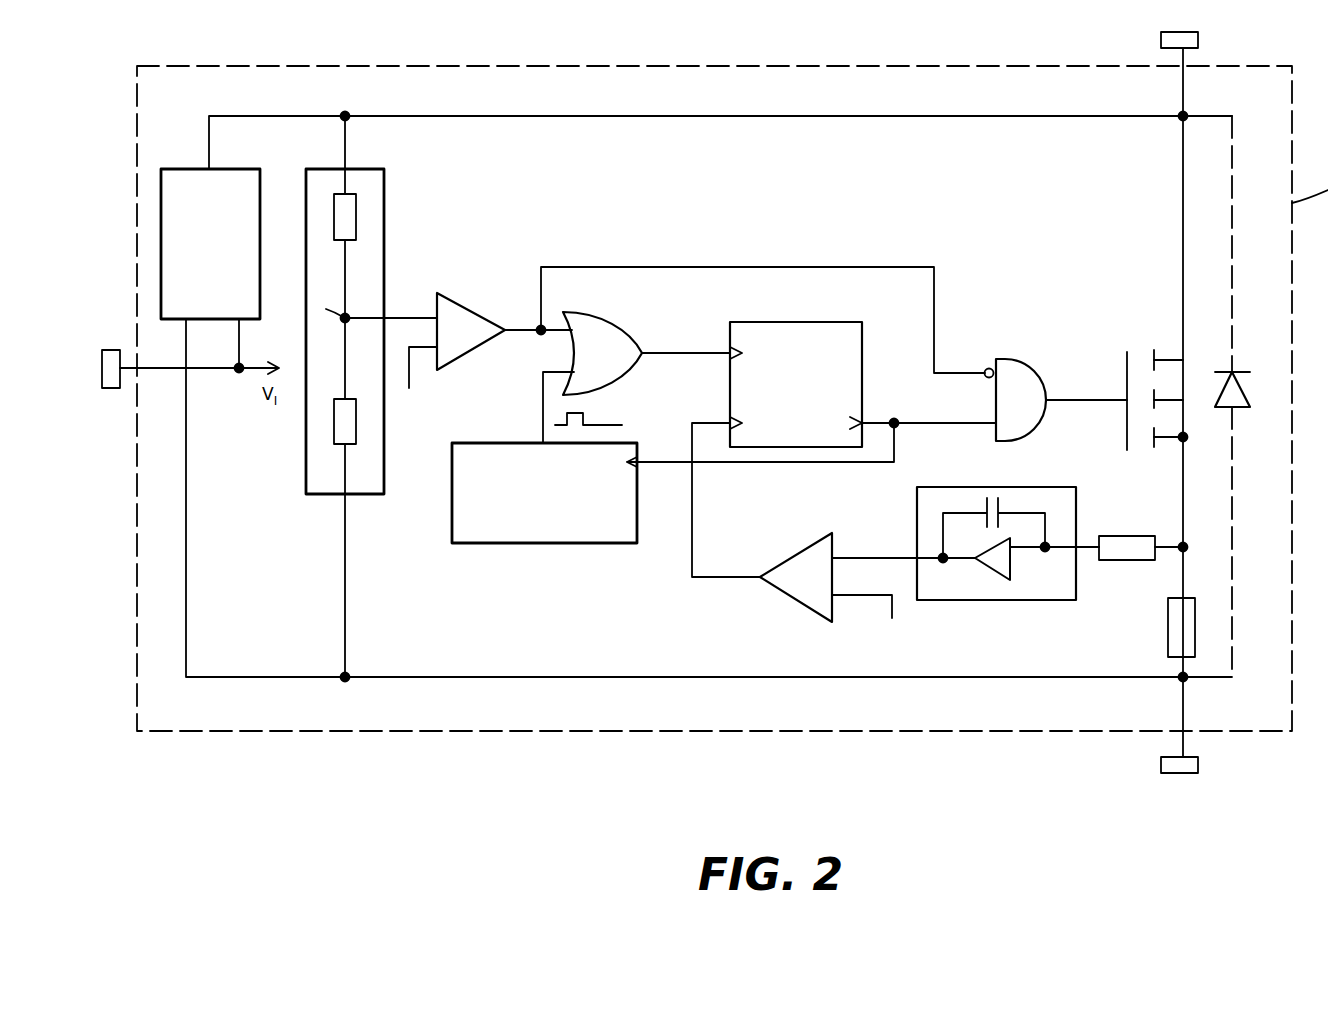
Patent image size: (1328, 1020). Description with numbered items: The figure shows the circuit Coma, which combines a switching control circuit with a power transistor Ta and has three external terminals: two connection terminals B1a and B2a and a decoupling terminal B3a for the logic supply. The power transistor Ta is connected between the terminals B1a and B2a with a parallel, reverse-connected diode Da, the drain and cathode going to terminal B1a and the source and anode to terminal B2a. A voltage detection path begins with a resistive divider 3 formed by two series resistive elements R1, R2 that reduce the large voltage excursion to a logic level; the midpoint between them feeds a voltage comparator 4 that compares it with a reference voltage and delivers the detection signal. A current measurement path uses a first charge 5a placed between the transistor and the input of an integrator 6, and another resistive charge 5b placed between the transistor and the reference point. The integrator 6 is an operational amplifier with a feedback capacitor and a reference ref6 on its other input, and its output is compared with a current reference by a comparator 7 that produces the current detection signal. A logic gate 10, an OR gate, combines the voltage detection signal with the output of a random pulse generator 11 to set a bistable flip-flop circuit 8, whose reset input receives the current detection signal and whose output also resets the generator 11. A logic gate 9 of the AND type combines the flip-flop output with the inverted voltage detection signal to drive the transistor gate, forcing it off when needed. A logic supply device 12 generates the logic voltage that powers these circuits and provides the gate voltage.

The logic supply device 12 is at (224, 169).
The resistive divider 3 is at (361, 396).
The voltage comparator 4 is at (463, 308).
The logic gate 10 is at (618, 318).
The random pulse generator 11 is at (541, 545).
The bistable flip-flop circuit 8 is at (800, 322).
The logic gate 9 is at (1008, 358).
The comparator 7 is at (792, 601).
The integrator 6 is at (965, 563).
The first charge 5a is at (1145, 536).
The resistive charge 5b is at (1167, 645).
The resistive element R1 is at (357, 226).
The resistive element R2 is at (357, 429).
The power transistor Ta is at (1152, 355).
The diode Da is at (1238, 370).
The connection terminal B1a is at (1198, 40).
The connection terminal B2a is at (1198, 767).
The decoupling terminal B3a is at (107, 392).
The circuit Coma is at (385, 732).
The reference ref6 is at (1013, 559).